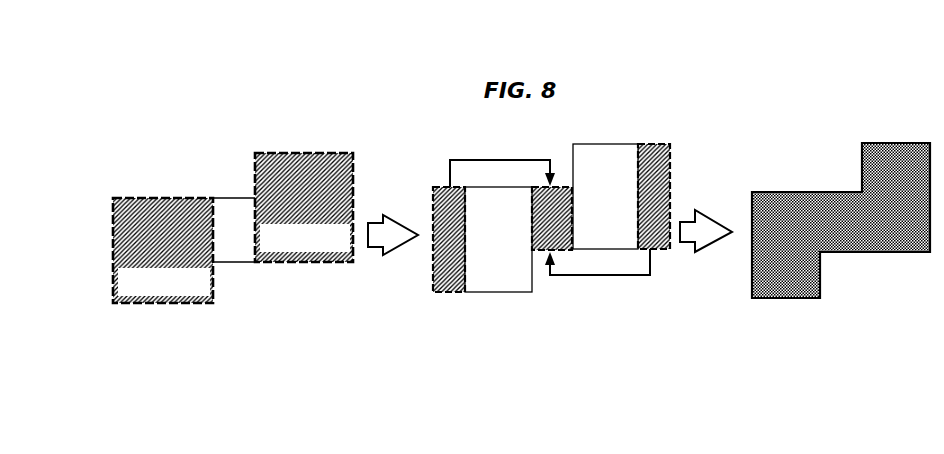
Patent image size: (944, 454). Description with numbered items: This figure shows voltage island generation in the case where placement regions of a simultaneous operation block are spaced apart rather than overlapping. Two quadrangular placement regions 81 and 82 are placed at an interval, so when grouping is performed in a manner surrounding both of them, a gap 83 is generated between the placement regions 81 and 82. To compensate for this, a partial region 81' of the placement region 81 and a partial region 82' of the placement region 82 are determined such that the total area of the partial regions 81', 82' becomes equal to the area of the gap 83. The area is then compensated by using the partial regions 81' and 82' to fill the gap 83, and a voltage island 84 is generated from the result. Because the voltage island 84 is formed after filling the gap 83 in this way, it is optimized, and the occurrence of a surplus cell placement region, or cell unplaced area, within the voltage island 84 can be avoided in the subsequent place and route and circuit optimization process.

The placement region 81 is at (322, 217).
The placement region 82 is at (446, 181).
The gap 83 is at (232, 210).
The partial region 81' is at (449, 262).
The partial region 82' is at (654, 174).
The voltage island 84 is at (892, 153).